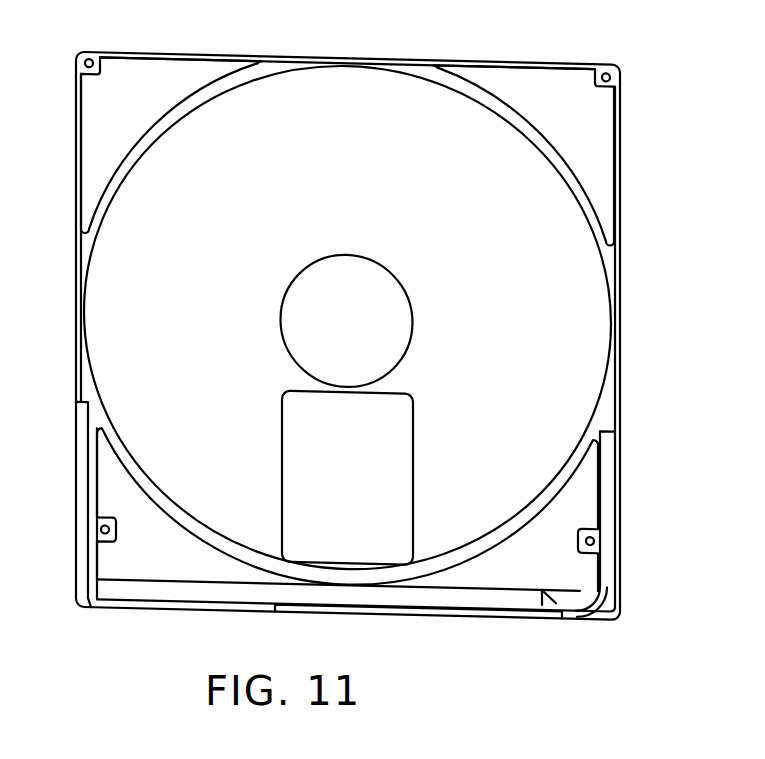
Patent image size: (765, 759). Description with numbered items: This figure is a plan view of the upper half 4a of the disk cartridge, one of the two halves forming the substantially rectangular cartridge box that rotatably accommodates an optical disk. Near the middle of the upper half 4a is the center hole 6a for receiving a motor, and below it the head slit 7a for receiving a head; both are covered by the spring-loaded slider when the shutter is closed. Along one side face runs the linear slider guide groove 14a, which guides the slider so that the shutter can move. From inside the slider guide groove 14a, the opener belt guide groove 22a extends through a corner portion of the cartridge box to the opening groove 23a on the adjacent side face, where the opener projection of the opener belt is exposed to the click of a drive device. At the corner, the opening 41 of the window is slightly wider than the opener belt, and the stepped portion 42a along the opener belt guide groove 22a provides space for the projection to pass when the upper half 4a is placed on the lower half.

The upper half 4a is at (538, 62).
The center hole 6a is at (414, 311).
The head slit 7a is at (414, 400).
The slider guide groove 14a is at (170, 601).
The opener belt guide groove 22a is at (438, 613).
The opening groove 23a is at (610, 483).
The opening 41 is at (552, 613).
The stepped portion 42a is at (576, 615).